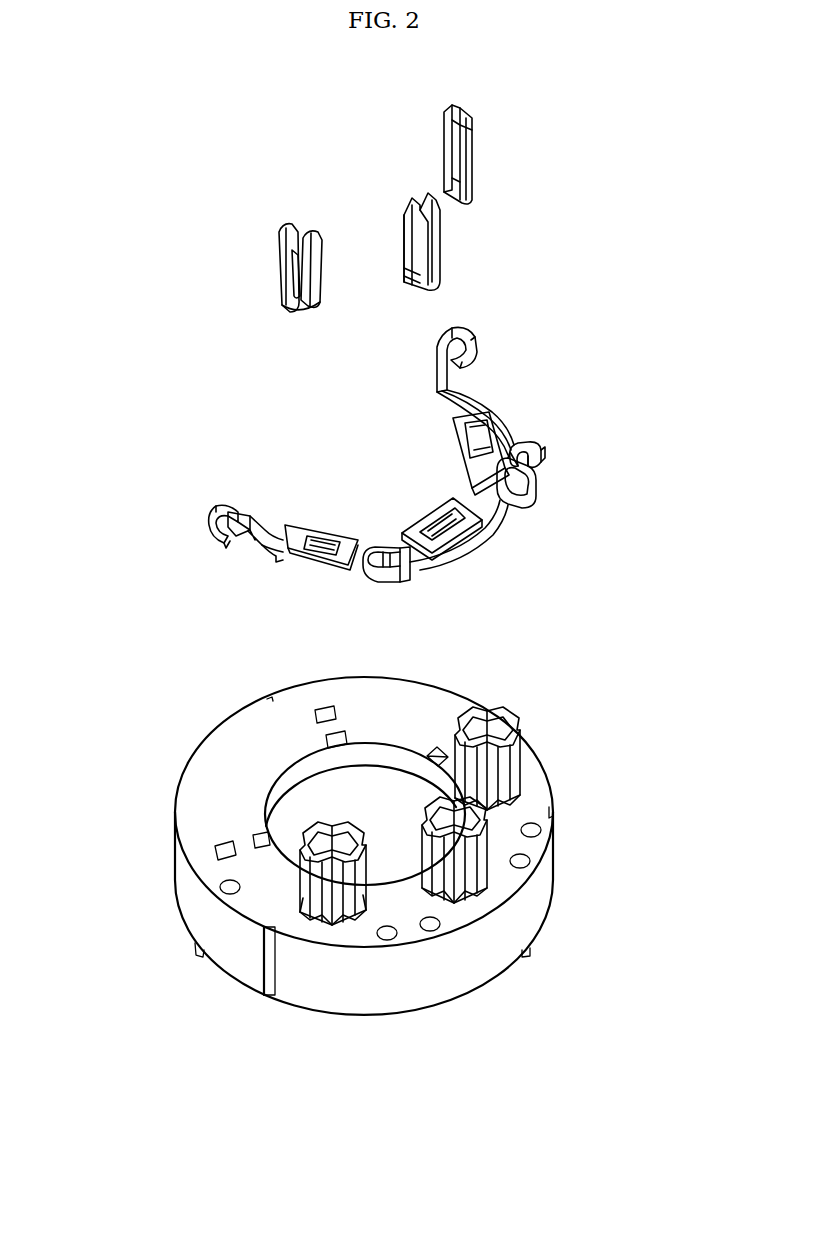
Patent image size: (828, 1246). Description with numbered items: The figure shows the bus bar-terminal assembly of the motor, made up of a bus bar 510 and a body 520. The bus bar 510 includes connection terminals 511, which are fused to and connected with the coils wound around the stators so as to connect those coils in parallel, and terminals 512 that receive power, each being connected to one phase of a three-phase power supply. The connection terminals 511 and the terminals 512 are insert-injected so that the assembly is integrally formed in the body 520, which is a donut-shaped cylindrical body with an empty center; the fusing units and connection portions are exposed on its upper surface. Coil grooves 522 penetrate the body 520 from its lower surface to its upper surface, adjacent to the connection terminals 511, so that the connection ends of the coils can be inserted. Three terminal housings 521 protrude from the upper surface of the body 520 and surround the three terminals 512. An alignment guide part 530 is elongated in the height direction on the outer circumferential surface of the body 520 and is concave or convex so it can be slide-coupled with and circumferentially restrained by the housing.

The bus bar 510 is at (577, 95).
The connection terminals 511 is at (478, 555).
The terminals 512 is at (440, 147).
The body 520 is at (558, 790).
The terminal housings 521 is at (528, 745).
The coil grooves 522 is at (465, 707).
The alignment guide part 530 is at (268, 972).